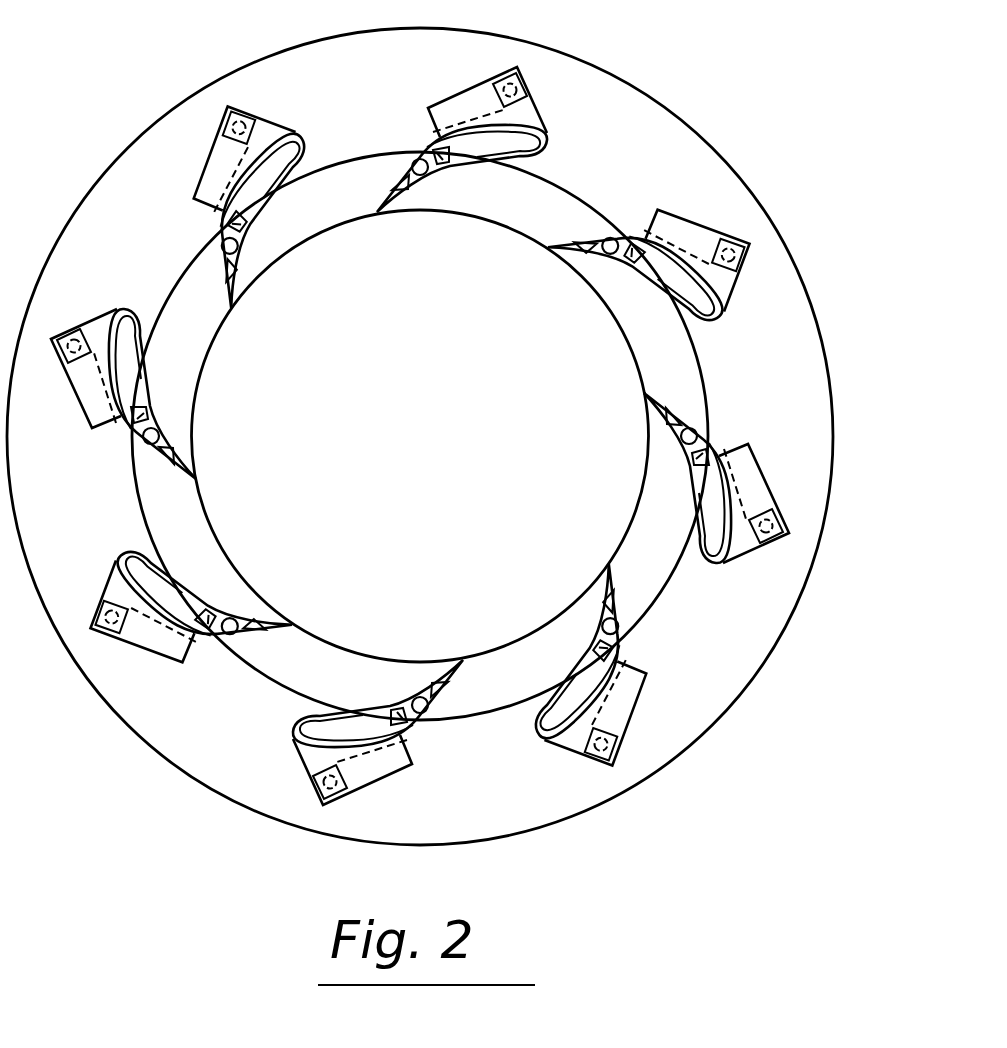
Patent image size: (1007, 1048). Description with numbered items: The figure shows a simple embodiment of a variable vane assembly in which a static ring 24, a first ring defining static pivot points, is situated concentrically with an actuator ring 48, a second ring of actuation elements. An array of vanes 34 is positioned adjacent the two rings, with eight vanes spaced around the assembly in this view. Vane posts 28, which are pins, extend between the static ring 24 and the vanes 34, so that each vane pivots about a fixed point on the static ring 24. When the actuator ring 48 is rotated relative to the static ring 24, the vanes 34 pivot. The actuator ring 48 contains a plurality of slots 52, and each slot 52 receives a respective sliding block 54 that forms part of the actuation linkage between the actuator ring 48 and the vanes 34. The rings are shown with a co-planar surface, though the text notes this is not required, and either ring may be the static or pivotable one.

The static ring 24 is at (653, 525).
The vane posts 28 is at (605, 260).
The vanes 34 is at (637, 273).
The actuator ring 48 is at (785, 330).
The slots 52 is at (683, 232).
The sliding blocks 54 is at (743, 237).